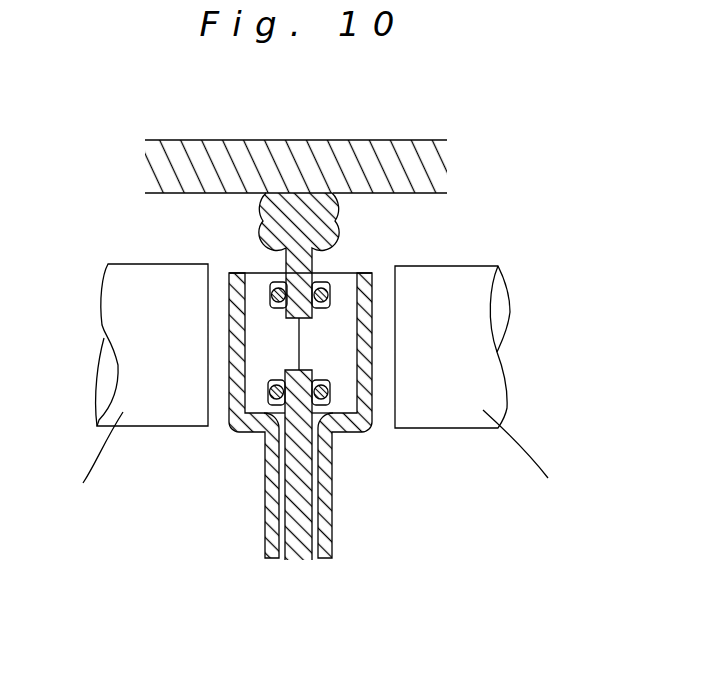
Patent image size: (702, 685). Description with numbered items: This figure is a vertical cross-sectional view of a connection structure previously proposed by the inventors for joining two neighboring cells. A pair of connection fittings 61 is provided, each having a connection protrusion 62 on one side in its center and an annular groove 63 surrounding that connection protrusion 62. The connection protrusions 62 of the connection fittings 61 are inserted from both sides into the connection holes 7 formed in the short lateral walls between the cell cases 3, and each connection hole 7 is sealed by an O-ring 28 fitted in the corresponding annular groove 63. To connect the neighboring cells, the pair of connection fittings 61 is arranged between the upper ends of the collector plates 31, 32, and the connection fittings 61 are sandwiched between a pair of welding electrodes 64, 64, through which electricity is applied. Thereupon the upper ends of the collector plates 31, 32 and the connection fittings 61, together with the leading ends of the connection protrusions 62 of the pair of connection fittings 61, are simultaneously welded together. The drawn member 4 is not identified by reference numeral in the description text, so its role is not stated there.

The cell case 3 is at (14, 425).
The support plate 4 is at (367, 173).
The connection hole 7 is at (308, 368).
The O-ring 28 is at (270, 300).
The collector plate 31 is at (263, 532).
The collector plate 32 is at (327, 542).
The connection fitting 61 is at (258, 393).
The connection protrusion 62 is at (292, 338).
The annular groove 63 is at (270, 273).
The welding electrode 64 is at (320, 465).